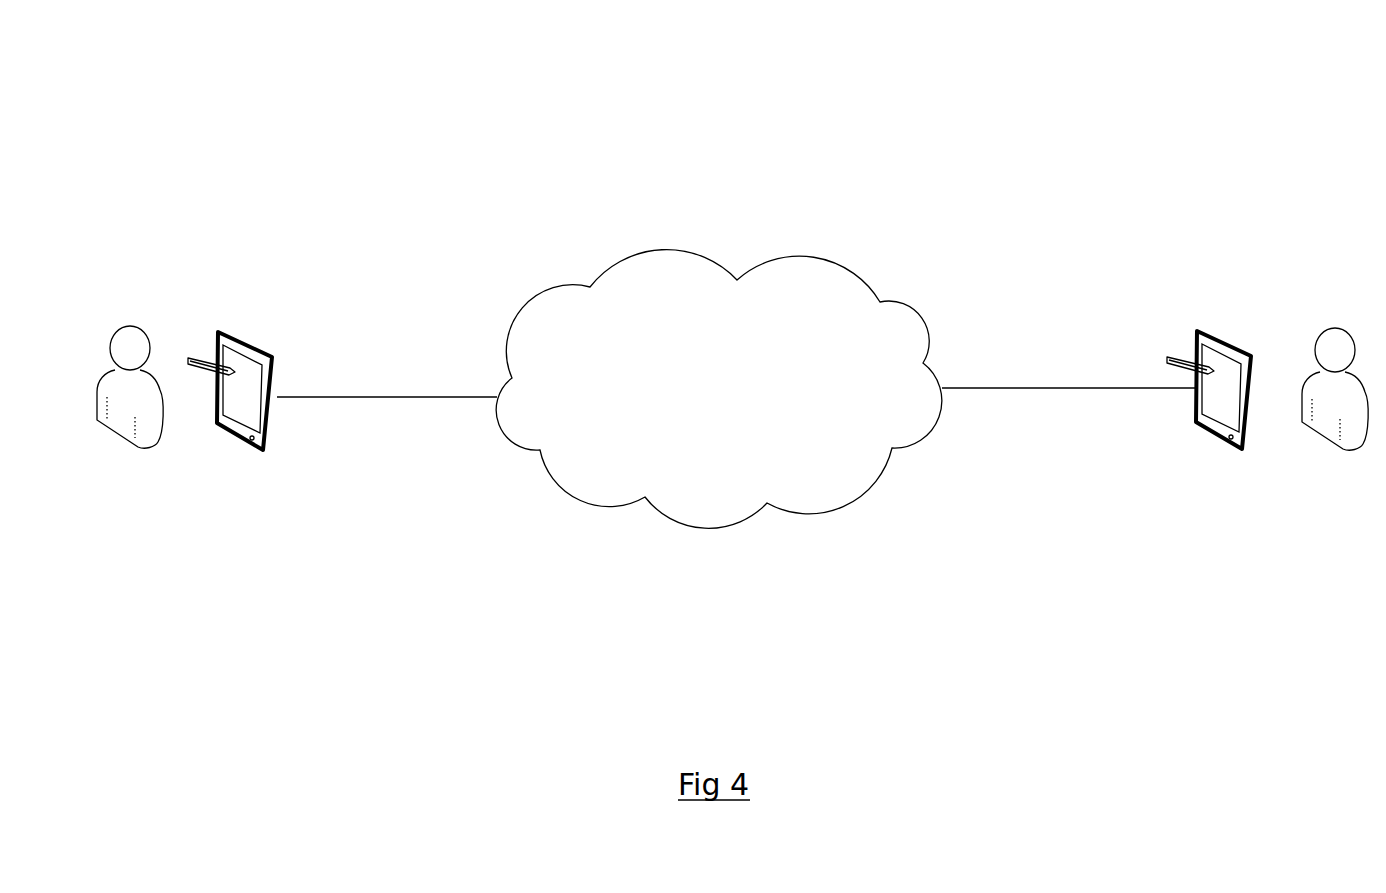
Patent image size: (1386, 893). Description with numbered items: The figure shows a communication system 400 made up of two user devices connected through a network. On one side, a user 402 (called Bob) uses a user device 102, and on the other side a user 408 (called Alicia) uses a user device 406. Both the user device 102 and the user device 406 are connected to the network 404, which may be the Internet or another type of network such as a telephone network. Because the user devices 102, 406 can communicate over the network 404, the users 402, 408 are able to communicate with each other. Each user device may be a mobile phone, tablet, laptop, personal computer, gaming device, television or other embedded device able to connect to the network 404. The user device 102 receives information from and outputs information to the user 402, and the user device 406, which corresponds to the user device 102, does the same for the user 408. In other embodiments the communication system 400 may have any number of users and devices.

The communication system 400 is at (353, 153).
The user 402 is at (132, 327).
The user device 102 is at (252, 353).
The network 404 is at (815, 257).
The user device 406 is at (1230, 355).
The user 408 is at (1338, 328).